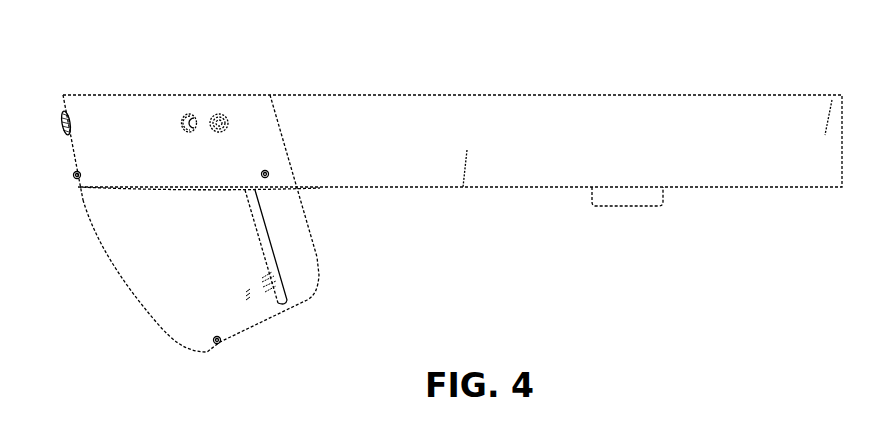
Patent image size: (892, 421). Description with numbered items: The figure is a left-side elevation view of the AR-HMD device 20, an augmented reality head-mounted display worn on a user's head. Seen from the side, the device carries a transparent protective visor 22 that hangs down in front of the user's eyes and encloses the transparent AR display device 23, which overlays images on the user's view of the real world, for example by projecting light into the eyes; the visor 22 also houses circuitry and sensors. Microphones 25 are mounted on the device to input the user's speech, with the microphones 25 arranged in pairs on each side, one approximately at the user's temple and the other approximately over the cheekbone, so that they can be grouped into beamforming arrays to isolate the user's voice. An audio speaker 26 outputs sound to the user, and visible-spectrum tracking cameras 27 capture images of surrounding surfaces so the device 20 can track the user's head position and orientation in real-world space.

The AR-HMD device 20 is at (98, 62).
The transparent protective visor 22 is at (243, 335).
The transparent AR display device 23 is at (262, 247).
The microphone 25 is at (266, 170).
The audio speaker 26 is at (648, 207).
The visible-spectrum tracking camera 27 is at (187, 113).